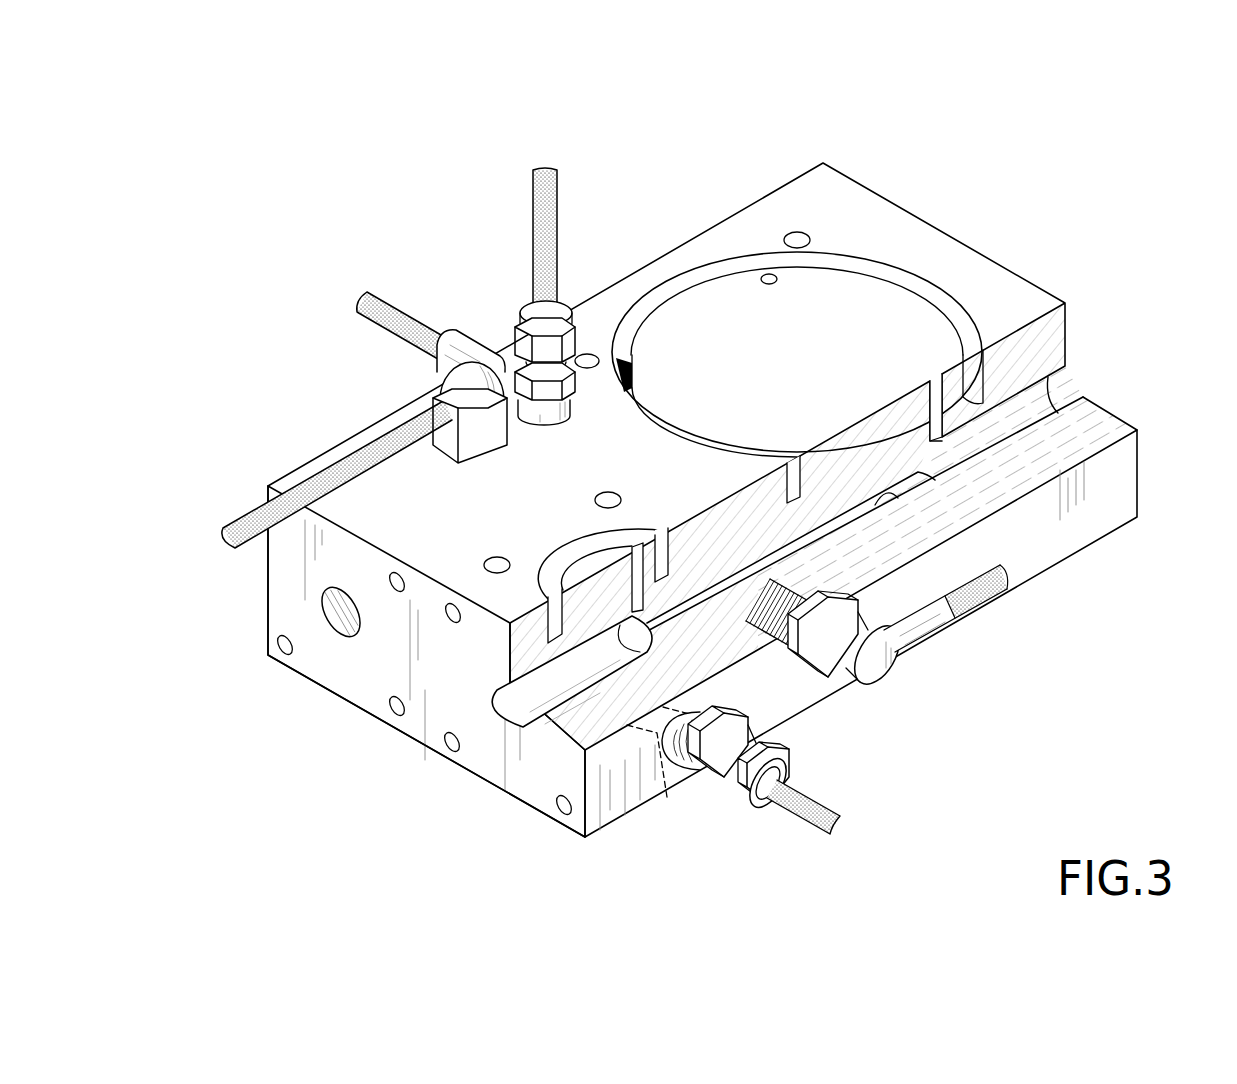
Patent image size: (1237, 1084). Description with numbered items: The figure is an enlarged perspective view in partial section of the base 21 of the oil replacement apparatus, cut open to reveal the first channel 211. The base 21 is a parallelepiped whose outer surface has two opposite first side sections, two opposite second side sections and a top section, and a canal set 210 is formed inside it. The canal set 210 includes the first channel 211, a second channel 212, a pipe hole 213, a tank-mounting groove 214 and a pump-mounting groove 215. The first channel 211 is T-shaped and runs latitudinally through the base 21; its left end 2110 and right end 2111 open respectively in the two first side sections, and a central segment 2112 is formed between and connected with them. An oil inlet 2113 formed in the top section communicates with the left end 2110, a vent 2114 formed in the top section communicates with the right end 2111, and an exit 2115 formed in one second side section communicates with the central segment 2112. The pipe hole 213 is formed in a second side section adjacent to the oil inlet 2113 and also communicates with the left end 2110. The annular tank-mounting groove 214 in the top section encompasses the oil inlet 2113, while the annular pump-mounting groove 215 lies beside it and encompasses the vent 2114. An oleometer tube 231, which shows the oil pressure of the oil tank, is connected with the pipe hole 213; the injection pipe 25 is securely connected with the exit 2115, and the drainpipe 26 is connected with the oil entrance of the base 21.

The base 21 is at (1007, 287).
The canal set 210 is at (1078, 372).
The first channel 211 is at (485, 704).
The second channel 212 is at (326, 618).
The pipe hole 213 is at (667, 797).
The tank-mounting groove 214 is at (553, 540).
The pump-mounting groove 215 is at (900, 277).
The left end 2110 is at (500, 722).
The right end 2111 is at (1060, 410).
The central segment 2112 is at (890, 495).
The oil inlet 2113 is at (641, 548).
The vent 2114 is at (930, 375).
The exit 2115 is at (752, 598).
The injection pipe 25 is at (987, 562).
The drainpipe 26 is at (248, 515).
The oleometer tube 231 is at (805, 818).